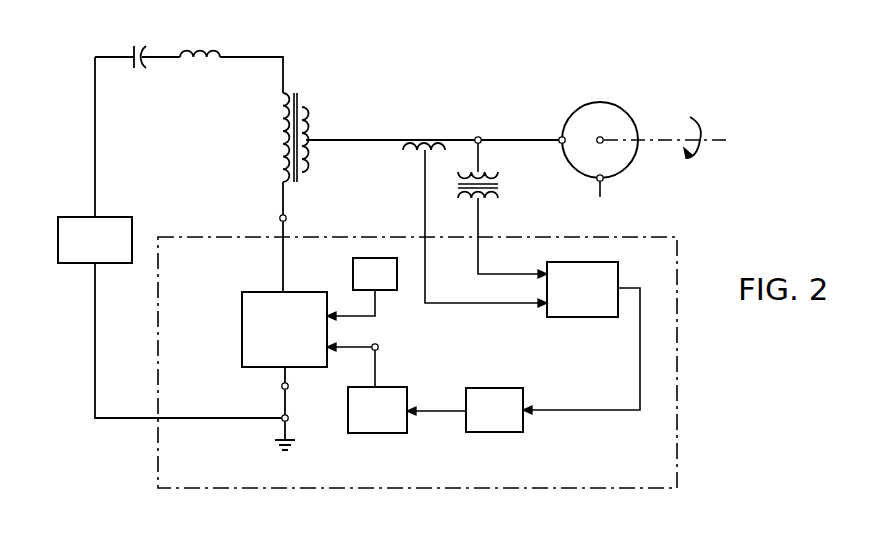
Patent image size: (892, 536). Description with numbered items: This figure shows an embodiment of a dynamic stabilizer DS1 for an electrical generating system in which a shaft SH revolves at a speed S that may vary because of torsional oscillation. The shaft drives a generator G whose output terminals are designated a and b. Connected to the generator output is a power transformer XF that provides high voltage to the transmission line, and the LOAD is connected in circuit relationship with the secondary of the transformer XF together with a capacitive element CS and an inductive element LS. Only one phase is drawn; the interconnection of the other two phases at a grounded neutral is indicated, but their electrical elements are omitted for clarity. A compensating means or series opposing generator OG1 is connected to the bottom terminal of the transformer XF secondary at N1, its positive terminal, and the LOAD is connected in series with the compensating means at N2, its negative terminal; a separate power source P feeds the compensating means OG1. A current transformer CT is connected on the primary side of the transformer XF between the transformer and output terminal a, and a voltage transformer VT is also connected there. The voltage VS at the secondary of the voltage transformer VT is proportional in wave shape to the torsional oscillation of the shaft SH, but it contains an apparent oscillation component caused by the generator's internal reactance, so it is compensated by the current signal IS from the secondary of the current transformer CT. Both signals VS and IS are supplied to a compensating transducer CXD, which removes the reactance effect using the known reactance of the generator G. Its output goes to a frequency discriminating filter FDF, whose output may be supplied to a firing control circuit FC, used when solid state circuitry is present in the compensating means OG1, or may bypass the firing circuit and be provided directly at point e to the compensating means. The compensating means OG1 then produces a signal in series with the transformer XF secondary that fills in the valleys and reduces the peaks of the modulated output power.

The capacitive element CS is at (143, 50).
The inductive element LS is at (196, 60).
The power transformer XF is at (338, 84).
The positive terminal of compensating means N1 is at (279, 218).
The current transformer CT is at (403, 152).
The voltage transformer VT is at (537, 193).
The generator G is at (608, 128).
The output terminal a is at (560, 138).
The output terminal b is at (604, 182).
The shaft SH is at (662, 140).
The speed S is at (713, 114).
The dynamic stabilizer DS1 is at (678, 232).
The load LOAD is at (95, 240).
The compensating means or series opposing generator OG1 is at (284, 329).
The power source P is at (362, 289).
The point e is at (378, 345).
The firing control circuit FC is at (377, 410).
The frequency discriminating filter FDF is at (465, 410).
The compensating transducer CXD is at (581, 338).
The voltage signal VS is at (505, 264).
The current signal IS is at (508, 317).
The negative terminal of compensating means N2 is at (281, 386).